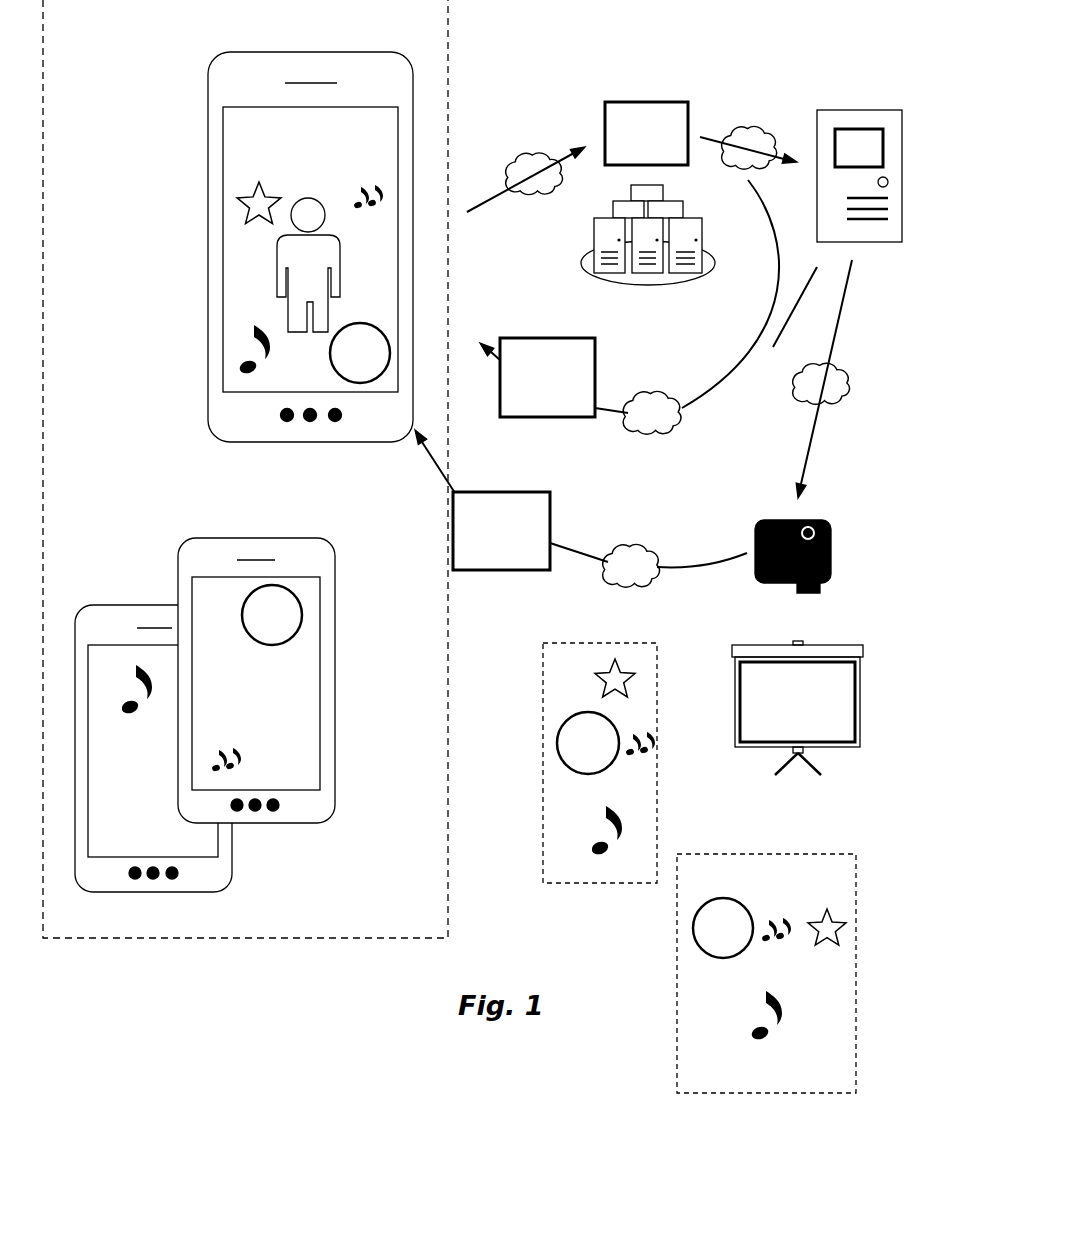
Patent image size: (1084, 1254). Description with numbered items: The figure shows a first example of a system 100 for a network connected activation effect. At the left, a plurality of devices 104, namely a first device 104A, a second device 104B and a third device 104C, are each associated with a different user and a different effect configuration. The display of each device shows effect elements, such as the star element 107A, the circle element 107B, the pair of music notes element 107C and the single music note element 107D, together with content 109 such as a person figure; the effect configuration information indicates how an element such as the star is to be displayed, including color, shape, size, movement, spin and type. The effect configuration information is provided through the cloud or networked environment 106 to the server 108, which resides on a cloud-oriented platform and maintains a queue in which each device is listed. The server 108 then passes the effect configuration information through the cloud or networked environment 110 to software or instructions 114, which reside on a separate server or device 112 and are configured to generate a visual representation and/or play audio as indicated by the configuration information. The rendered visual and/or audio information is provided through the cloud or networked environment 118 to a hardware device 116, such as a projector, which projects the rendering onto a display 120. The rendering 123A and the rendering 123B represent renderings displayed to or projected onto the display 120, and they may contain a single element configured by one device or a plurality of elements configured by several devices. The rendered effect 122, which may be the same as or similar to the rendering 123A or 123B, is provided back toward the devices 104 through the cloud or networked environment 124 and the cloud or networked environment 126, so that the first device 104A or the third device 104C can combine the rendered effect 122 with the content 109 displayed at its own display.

The system 100 is at (221, 1105).
The plurality of devices 104 is at (450, 900).
The first device 104A is at (277, 55).
The second device 104B is at (108, 618).
The third device 104C is at (193, 557).
The cloud or networked environment 106 is at (533, 158).
The element 107A is at (237, 193).
The element 107B is at (385, 342).
The element 107C is at (380, 183).
The element 107D is at (237, 367).
The server 108 is at (667, 102).
The content 109 is at (280, 275).
The cloud or networked environment 110 is at (755, 128).
The server or device 112 is at (889, 147).
The software or instructions 114 is at (885, 145).
The hardware device 116 is at (832, 537).
The cloud or networked environment 118 is at (847, 375).
The display 120 is at (867, 645).
The rendered effect 122 is at (523, 338).
The rendering 123A is at (670, 646).
The rendering 123B is at (869, 868).
The cloud or networked environment 124 is at (658, 393).
The cloud or networked environment 126 is at (644, 547).